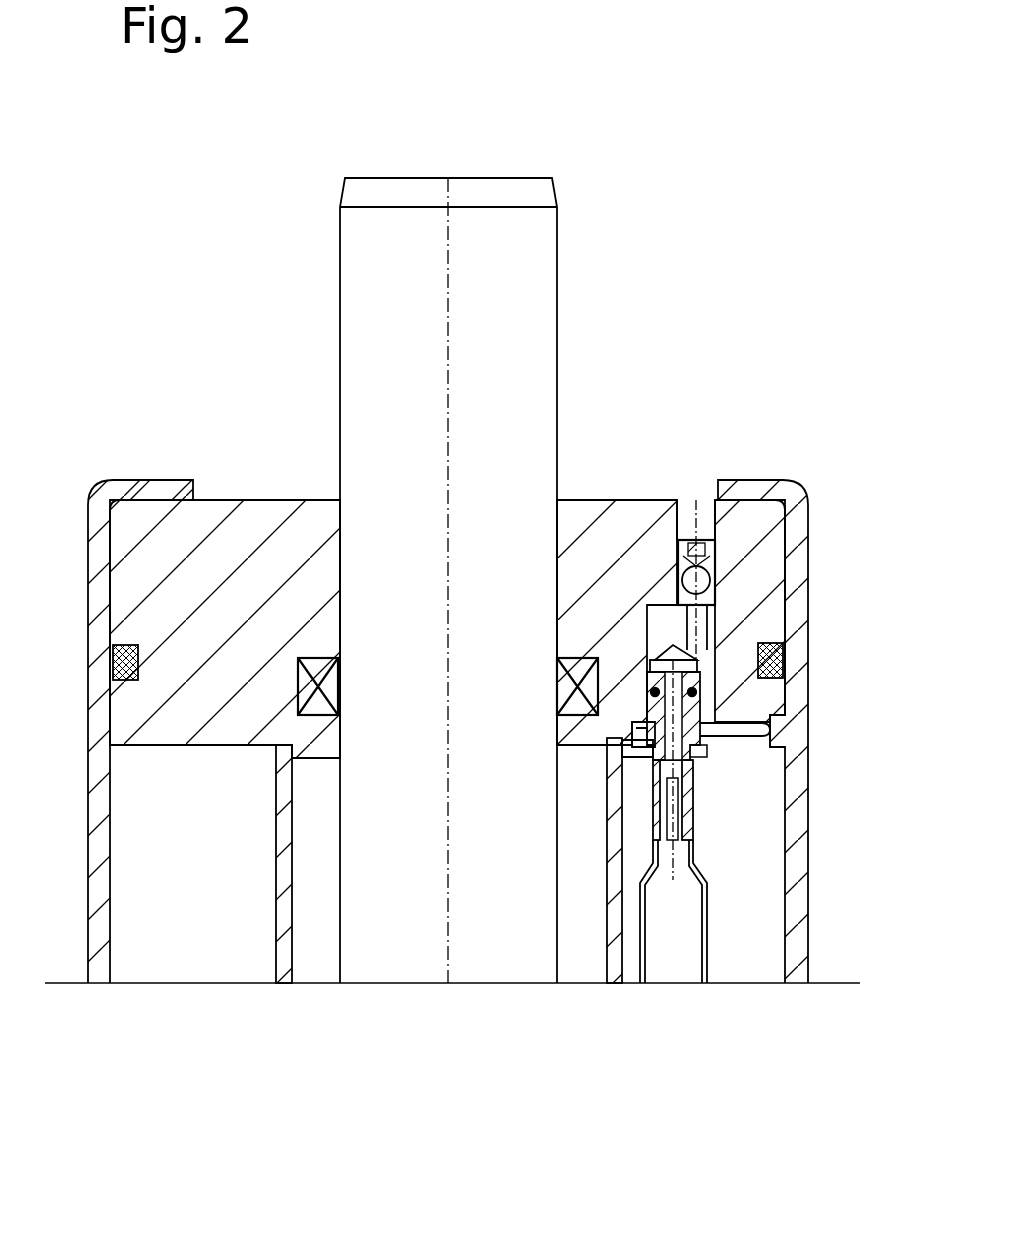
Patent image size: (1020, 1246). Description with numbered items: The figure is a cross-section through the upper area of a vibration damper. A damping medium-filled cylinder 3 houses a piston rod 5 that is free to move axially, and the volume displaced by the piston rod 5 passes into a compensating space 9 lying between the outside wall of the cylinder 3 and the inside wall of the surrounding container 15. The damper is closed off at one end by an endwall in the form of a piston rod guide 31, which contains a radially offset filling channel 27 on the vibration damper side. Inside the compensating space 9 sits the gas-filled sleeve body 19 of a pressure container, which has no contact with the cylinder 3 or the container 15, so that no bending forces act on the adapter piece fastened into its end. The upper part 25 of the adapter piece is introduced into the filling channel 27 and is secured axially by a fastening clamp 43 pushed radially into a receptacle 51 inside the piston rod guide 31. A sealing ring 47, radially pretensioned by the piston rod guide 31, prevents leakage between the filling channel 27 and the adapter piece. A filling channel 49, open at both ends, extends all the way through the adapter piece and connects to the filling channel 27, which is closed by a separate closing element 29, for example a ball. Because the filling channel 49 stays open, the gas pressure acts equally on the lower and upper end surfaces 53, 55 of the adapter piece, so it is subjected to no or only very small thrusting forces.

The cylinder 3 is at (287, 985).
The piston rod 5 is at (375, 259).
The compensating space 9 is at (745, 950).
The container 15 is at (100, 890).
The sleeve body 19 is at (678, 950).
The upper part 25 is at (705, 720).
The filling channel 27 is at (696, 500).
The closing element 29 is at (703, 575).
The piston rod guide 31 is at (243, 540).
The fastening clamp 43 is at (743, 735).
The sealing ring 47 is at (700, 695).
The filling channel 49 is at (695, 787).
The receptacle 51 is at (775, 733).
The lower end surface 53 is at (660, 845).
The upper end surface 55 is at (653, 655).